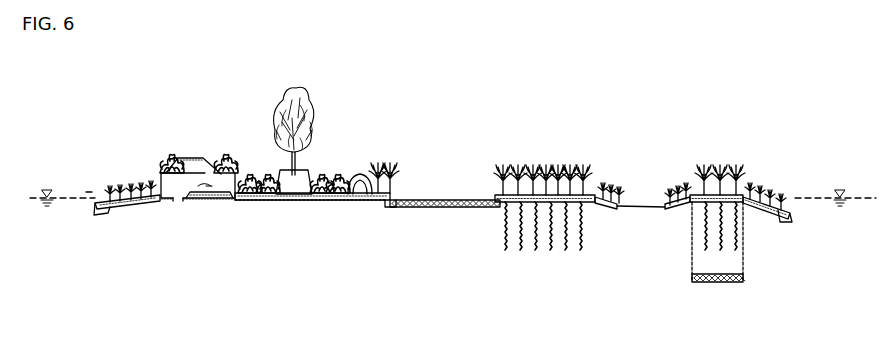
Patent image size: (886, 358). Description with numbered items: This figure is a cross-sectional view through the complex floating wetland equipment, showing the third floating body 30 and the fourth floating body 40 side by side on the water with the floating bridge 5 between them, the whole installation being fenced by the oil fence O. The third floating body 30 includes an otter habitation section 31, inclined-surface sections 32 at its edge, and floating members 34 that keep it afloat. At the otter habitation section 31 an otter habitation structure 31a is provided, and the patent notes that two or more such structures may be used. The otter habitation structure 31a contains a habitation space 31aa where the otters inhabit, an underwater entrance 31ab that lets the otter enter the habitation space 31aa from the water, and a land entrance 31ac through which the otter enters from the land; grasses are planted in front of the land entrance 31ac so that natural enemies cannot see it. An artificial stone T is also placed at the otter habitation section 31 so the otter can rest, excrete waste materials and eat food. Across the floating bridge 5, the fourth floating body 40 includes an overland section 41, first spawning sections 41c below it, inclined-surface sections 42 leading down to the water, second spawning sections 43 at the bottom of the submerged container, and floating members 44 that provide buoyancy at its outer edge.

The oil fence O is at (88, 190).
The otter habitation section 31 is at (154, 193).
The otter habitation structure 31a is at (199, 155).
The land entrance 31ac is at (172, 160).
The underwater entrance 31ab is at (177, 203).
The habitation space 31aa is at (206, 193).
The inclined-surface section 32 is at (128, 214).
The floating member 34 is at (98, 216).
The third floating body 30 is at (247, 118).
The artificial stone T is at (361, 174).
The floating bridge 5 is at (440, 196).
The fourth floating body 40 is at (639, 123).
The overland section 41 is at (532, 190).
The first spawning section 41c is at (506, 250).
The inclined-surface section 42 is at (614, 188).
The second spawning section 43 is at (718, 288).
The floating member 44 is at (788, 222).